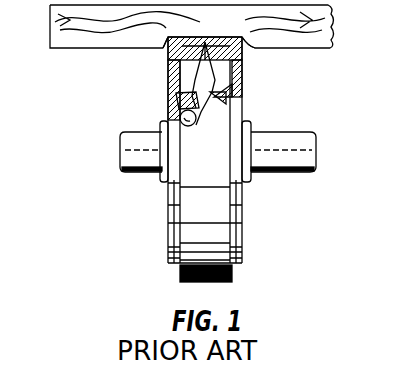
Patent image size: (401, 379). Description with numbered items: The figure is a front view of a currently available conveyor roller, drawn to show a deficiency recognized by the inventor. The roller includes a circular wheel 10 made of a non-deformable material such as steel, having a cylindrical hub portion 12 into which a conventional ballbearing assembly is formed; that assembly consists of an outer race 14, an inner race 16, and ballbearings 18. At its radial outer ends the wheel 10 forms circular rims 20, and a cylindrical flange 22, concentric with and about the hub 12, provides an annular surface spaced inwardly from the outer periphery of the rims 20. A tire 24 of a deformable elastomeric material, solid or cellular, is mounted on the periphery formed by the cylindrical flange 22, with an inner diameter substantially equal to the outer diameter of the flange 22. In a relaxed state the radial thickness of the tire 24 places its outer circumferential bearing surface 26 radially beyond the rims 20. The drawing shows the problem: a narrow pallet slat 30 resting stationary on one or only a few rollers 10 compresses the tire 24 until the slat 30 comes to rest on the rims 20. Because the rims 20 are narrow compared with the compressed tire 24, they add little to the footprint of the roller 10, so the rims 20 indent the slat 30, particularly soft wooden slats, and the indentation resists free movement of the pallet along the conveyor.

The circular wheel 10 is at (244, 88).
The cylindrical hub portion 12 is at (246, 110).
The outer race 14 is at (173, 97).
The inner race 16 is at (187, 136).
The ballbearings 18 is at (164, 122).
The circular rims 20 is at (163, 47).
The cylindrical flange 22 is at (177, 75).
The tire 24 is at (246, 50).
The outer circumferential bearing surface 26 is at (183, 282).
The slat 30 is at (343, 24).